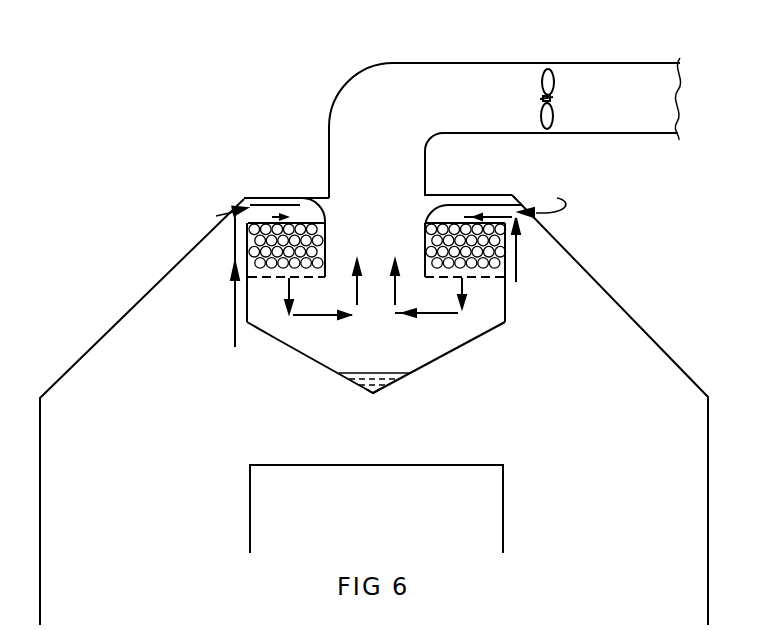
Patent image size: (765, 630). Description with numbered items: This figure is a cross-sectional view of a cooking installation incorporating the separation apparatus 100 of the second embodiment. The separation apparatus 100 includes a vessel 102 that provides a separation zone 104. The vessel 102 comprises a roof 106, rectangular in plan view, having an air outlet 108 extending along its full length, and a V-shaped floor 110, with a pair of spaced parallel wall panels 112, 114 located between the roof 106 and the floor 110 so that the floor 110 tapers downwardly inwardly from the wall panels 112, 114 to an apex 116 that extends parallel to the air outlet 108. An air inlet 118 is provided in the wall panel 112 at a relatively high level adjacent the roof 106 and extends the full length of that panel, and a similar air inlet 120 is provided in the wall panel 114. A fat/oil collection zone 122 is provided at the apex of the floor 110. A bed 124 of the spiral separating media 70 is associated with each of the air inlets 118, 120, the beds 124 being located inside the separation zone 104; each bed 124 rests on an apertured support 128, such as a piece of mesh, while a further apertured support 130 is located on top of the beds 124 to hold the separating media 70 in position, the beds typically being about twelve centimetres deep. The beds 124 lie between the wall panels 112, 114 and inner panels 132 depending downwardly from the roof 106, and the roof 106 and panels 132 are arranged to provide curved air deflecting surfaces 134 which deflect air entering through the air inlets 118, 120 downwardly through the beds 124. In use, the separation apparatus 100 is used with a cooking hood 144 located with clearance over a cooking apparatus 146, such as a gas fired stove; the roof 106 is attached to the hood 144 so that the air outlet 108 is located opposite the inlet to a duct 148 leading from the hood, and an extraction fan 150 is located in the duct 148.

The spiral separating media 70 is at (477, 278).
The separation apparatus 100 is at (547, 267).
The vessel 102 is at (243, 341).
The separation zone 104 is at (307, 340).
The roof 106 is at (272, 220).
The air outlet 108 is at (375, 174).
The V-shaped floor 110 is at (440, 358).
The wall panel 112 is at (250, 279).
The wall panel 114 is at (507, 262).
The apex 116 is at (373, 393).
The air inlet 118 is at (212, 219).
The air inlet 120 is at (551, 196).
The fat/oil collection zone 122 is at (340, 385).
The bed 124 is at (424, 249).
The apertured support 128 is at (445, 278).
The further apertured support 130 is at (265, 197).
The inner panel 132 is at (424, 229).
The curved air deflecting surface 134 is at (295, 220).
The cooking hood 144 is at (147, 289).
The cooking apparatus 146 is at (415, 524).
The duct 148 is at (518, 63).
The extraction fan 150 is at (553, 80).